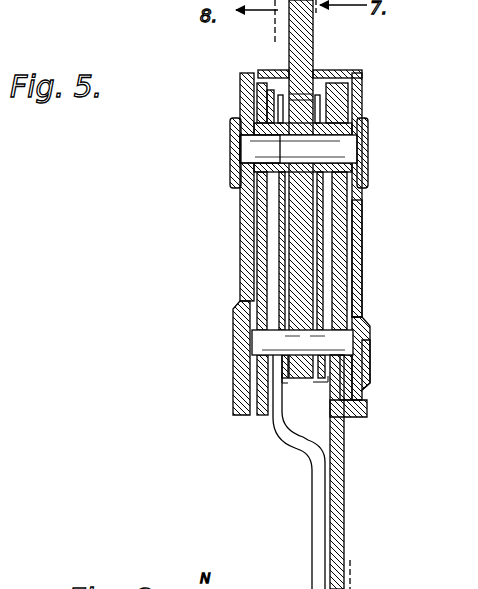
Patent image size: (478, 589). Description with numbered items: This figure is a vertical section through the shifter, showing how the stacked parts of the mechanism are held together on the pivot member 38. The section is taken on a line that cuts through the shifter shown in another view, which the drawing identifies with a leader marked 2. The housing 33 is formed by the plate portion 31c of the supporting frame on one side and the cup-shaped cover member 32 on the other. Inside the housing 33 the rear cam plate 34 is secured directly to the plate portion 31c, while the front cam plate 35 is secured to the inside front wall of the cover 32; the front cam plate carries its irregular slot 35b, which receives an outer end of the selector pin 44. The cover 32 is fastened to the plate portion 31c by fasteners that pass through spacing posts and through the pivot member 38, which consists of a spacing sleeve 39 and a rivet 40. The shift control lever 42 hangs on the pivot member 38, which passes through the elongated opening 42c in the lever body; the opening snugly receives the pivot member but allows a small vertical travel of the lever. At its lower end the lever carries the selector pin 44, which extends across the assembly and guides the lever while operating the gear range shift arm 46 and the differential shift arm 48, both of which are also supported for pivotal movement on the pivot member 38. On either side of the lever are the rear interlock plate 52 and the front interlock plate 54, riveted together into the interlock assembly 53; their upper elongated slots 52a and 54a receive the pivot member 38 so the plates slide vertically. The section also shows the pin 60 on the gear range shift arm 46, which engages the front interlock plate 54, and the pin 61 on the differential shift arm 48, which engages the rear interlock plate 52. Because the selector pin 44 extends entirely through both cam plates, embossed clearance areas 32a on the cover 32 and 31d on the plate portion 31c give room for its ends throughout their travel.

The section line 2 is at (363, 587).
The plate portion 31c is at (247, 256).
The embossed clearance area 31d is at (240, 333).
The cup-shaped cover member 32 is at (362, 80).
The embossed clearance area 32a is at (368, 345).
The housing 33 is at (366, 246).
The rear cam plate 34 is at (255, 414).
The front cam plate 35 is at (360, 412).
The irregular slot 35b is at (372, 374).
The pivot member 38 is at (382, 124).
The spacing sleeve 39 is at (270, 153).
The rivet 40 is at (348, 147).
The shift control lever 42 is at (311, 28).
The elongated opening 42c is at (302, 110).
The selector pin 44 is at (262, 340).
The gear range shift arm 46 is at (345, 473).
The differential shift arm 48 is at (312, 500).
The rear interlock plate 52 is at (262, 210).
The elongated slot 52a is at (276, 108).
The interlock assembly 53 is at (298, 394).
The front interlock plate 54 is at (340, 212).
The elongated slot 54a is at (318, 100).
The pin 60 is at (345, 282).
The pin 61 is at (282, 290).